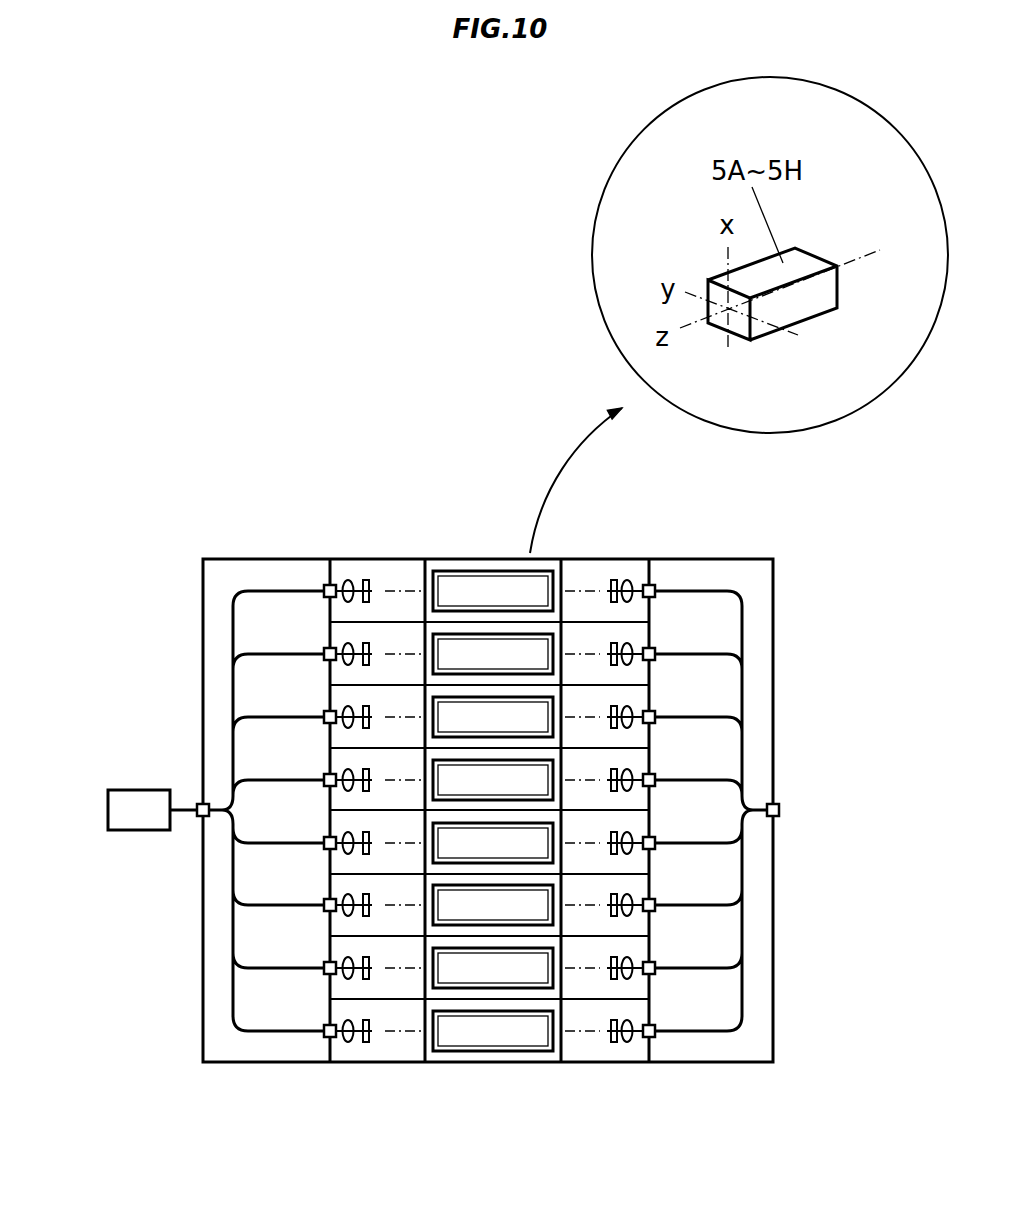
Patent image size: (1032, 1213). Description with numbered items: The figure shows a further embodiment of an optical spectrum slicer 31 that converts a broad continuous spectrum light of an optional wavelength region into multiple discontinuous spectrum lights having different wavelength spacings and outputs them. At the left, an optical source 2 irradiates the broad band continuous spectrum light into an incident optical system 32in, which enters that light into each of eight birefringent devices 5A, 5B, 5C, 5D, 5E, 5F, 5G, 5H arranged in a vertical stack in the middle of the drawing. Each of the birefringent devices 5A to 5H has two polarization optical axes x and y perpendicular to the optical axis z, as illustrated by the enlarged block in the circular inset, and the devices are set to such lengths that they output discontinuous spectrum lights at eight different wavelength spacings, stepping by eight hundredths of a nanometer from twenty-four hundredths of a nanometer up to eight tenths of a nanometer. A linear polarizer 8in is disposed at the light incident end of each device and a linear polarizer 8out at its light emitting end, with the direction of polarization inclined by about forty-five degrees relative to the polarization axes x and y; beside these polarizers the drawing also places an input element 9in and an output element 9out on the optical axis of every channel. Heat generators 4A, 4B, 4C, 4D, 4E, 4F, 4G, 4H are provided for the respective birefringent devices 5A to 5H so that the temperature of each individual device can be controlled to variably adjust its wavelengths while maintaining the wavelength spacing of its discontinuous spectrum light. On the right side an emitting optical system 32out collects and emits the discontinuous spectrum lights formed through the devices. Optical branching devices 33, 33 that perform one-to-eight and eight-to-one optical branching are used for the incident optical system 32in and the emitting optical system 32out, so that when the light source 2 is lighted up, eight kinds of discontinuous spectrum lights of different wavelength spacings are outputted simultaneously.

The optical spectrum slicer 31 is at (212, 543).
The optical source 2 is at (132, 812).
The optical branching device 33 is at (252, 1052).
The incident optical system 32in is at (197, 1116).
The emitting optical system 32out is at (778, 1116).
The linear polarizer 8in is at (365, 580).
The input collimating lens 9in is at (348, 580).
The linear polarizer 8out is at (616, 580).
The output condensing lens 9out is at (629, 580).
The heat generator 4A is at (480, 578).
The heat generator 4B is at (557, 678).
The heat generator 4C is at (557, 742).
The heat generator 4D is at (557, 804).
The heat generator 4E is at (557, 817).
The heat generator 4F is at (557, 882).
The heat generator 4G is at (557, 942).
The heat generator 4H is at (470, 1058).
The birefringent device 5A is at (493, 591).
The birefringent device 5B is at (493, 654).
The birefringent device 5C is at (493, 717).
The birefringent device 5D is at (493, 780).
The birefringent device 5E is at (493, 843).
The birefringent device 5F is at (493, 905).
The birefringent device 5G is at (493, 968).
The birefringent device 5H is at (493, 1031).